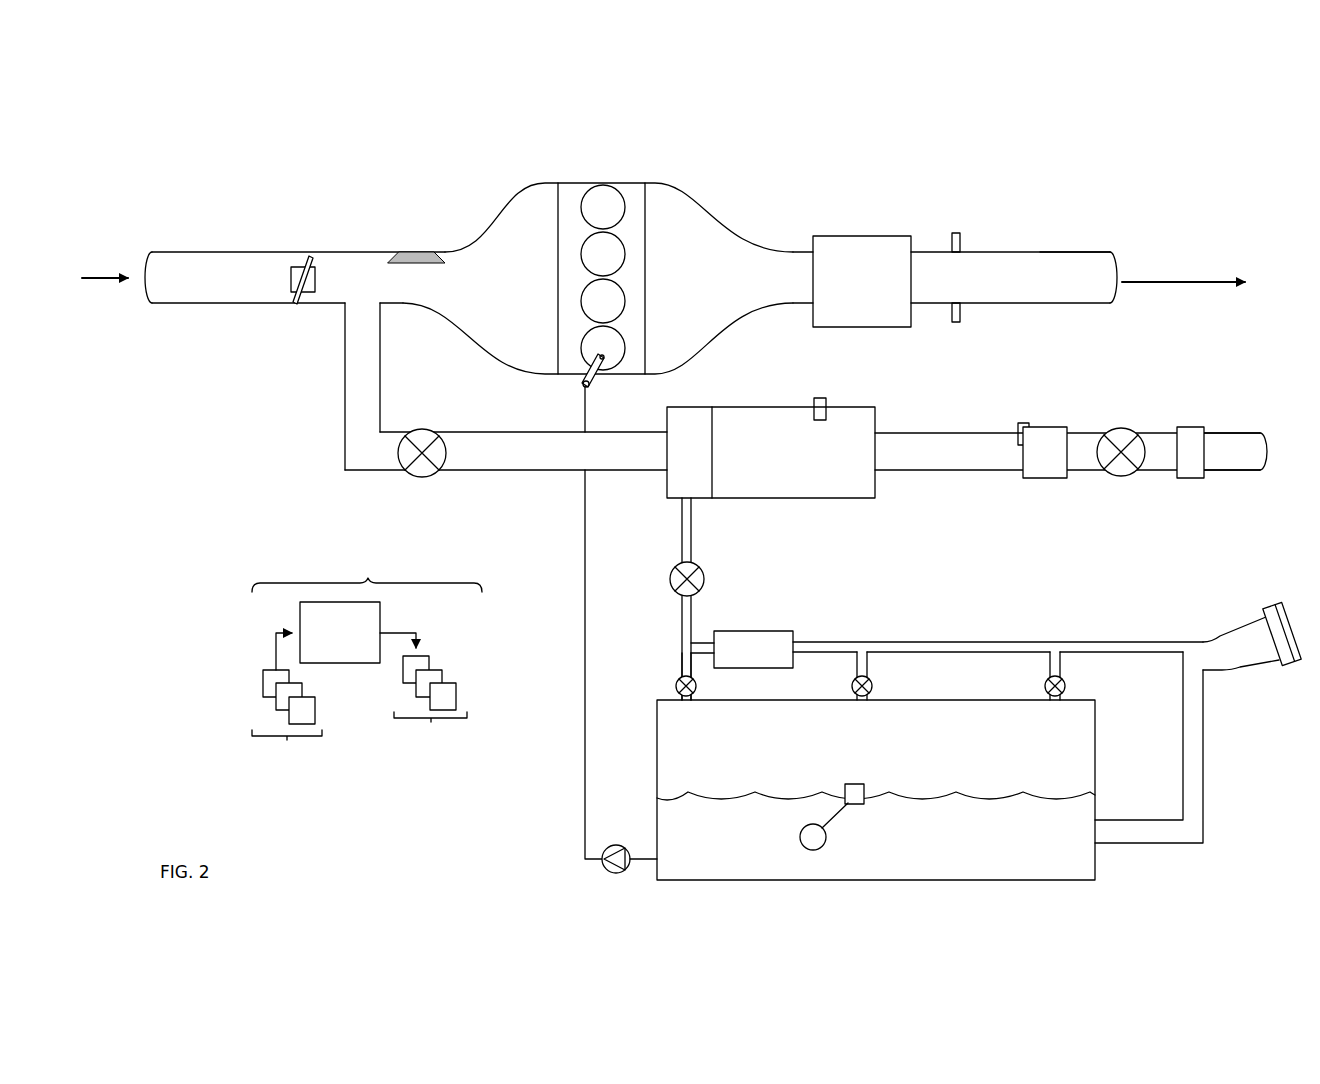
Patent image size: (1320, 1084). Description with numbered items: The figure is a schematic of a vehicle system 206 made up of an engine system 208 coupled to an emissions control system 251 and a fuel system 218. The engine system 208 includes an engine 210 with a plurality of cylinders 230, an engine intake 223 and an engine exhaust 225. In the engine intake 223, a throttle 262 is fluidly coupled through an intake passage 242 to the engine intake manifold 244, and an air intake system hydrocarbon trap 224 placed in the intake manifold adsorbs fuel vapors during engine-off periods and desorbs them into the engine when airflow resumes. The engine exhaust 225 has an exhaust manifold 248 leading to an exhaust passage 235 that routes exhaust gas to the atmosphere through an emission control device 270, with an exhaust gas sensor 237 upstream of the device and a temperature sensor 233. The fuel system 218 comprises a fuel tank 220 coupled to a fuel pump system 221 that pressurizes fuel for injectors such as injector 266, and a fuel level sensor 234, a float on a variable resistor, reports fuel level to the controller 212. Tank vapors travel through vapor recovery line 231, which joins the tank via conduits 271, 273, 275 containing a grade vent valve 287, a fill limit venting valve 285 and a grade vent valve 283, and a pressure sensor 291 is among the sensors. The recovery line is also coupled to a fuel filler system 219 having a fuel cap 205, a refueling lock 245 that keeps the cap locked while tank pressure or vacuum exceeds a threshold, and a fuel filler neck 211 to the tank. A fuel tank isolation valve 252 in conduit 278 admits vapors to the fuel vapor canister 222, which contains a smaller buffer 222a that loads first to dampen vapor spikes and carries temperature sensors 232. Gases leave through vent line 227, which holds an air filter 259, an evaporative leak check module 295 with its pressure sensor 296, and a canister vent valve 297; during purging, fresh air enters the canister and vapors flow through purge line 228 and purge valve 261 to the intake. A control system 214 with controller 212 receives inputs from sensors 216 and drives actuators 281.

The fuel cap 205 is at (1282, 604).
The vehicle system 206 is at (166, 184).
The engine system 208 is at (925, 178).
The engine 210 is at (645, 268).
The fuel filler pipe or neck 211 is at (1203, 742).
The controller 212 is at (340, 632).
The control system 214 is at (367, 658).
The sensors 216 is at (287, 707).
The fuel system 218 is at (1222, 812).
The fuel filler system 219 is at (1250, 602).
The fuel tank 220 is at (1095, 792).
The fuel pump system 221 is at (616, 845).
The fuel vapor canister 222 is at (876, 428).
The buffer 222a is at (690, 408).
The engine intake 223 is at (350, 186).
The air intake system hydrocarbon trap 224 is at (420, 254).
The engine exhaust 225 is at (818, 166).
The vent line 227 is at (1071, 451).
The purge line 228 is at (506, 451).
The cylinders 230 is at (622, 210).
The vapor recovery line 231 is at (1112, 642).
The temperature sensors 232 is at (818, 398).
The temperature sensor 233 is at (950, 312).
The fuel level sensor 234 is at (855, 784).
The exhaust passage 235 is at (1060, 252).
The exhaust gas sensor 237 is at (950, 244).
The intake passage 242 is at (334, 306).
The engine intake manifold 244 is at (480, 278).
The refueling lock 245 is at (1282, 666).
The exhaust manifold 248 is at (719, 278).
The emissions control system 251 is at (1250, 390).
The fuel tank isolation valve 252 is at (678, 592).
The air filter 259 is at (1194, 427).
The purge valve 261 is at (421, 430).
The throttle 262 is at (315, 288).
The fuel injector 266 is at (594, 381).
The emission control device 270 is at (845, 237).
The conduit 271 is at (694, 668).
The conduit 273 is at (857, 664).
The conduit 275 is at (1050, 666).
The conduit 278 is at (680, 530).
The actuators 281 is at (426, 700).
The grade vent valve 283 is at (1066, 686).
The fill limit venting valve 285 is at (874, 686).
The grade vent valve 287 is at (676, 686).
The pressure sensor 291 is at (794, 640).
The evaporative leak check module 295 is at (1040, 427).
The pressure sensor 296 is at (1022, 423).
The canister vent valve 297 is at (1122, 428).